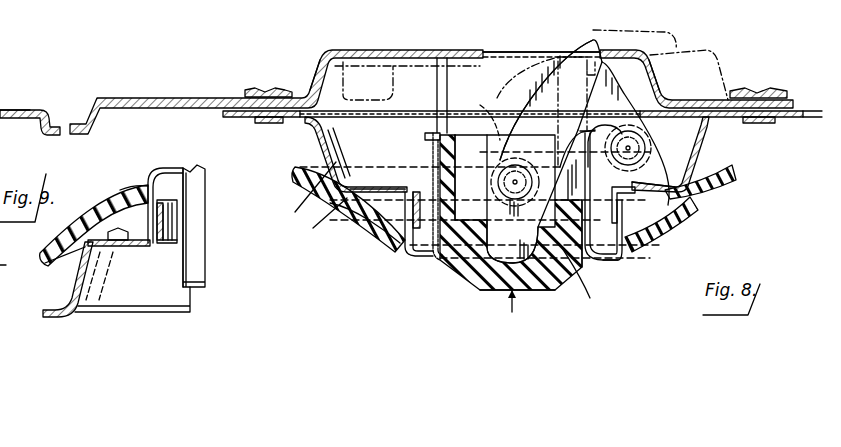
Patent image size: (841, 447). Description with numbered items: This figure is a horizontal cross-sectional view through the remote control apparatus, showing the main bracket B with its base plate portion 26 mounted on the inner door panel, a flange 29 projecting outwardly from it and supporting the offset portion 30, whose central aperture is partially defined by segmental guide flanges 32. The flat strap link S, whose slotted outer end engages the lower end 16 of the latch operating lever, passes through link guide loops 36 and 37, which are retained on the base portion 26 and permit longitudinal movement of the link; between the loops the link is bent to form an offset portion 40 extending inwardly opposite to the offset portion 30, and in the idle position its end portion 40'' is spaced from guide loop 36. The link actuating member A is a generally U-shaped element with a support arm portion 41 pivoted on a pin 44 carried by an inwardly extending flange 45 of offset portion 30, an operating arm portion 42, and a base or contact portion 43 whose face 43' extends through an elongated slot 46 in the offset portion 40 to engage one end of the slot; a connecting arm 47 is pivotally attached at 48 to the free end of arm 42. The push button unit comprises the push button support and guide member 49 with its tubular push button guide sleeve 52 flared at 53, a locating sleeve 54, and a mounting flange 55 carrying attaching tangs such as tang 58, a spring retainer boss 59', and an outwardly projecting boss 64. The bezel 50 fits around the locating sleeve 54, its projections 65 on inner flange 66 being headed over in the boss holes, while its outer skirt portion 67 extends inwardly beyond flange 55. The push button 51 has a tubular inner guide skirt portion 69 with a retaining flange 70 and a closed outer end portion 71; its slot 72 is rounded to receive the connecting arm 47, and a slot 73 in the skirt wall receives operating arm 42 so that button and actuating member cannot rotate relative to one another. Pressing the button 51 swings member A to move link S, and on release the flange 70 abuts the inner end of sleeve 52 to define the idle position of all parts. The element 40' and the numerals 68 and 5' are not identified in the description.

In FIG. 8, the link member S is at (157, 97).
In FIG. 8, the lower end of latch operating lever 16 is at (0, 72).
In FIG. 8, the base plate portion 26 is at (312, 120).
In FIG. 9, the base plate portion 26 is at (47, 314).
In FIG. 8, the flange 29 is at (323, 186).
In FIG. 9, the flange 29 is at (88, 303).
In FIG. 8, the offset portion 30 is at (400, 185).
In FIG. 9, the offset portion 30 is at (143, 247).
In FIG. 8, the guide flanges 32 is at (410, 253).
In FIG. 9, the guide flanges 32 is at (163, 224).
In FIG. 8, the link guide loop 36 is at (256, 87).
In FIG. 8, the link guide loop 37 is at (774, 88).
In FIG. 8, the offset portion of link 40 is at (564, 61).
In FIG. 8, the cover plate slanted portion 40' is at (717, 65).
In FIG. 8, the end portion of offset 40'' is at (301, 71).
In FIG. 8, the arm portion 41 is at (642, 94).
In FIG. 8, the arm portion 42 is at (510, 135).
In FIG. 8, the base portion 43 is at (559, 88).
In FIG. 8, the face 43' is at (570, 88).
In FIG. 8, the pin 44 is at (645, 147).
In FIG. 8, the flange 45 is at (665, 186).
In FIG. 8, the elongated slot 46 is at (497, 52).
In FIG. 8, the connecting arm 47 is at (570, 280).
In FIG. 8, the pivot 48 is at (500, 184).
In FIG. 8, the push button support and guide member 49 is at (418, 270).
In FIG. 9, the push button support and guide member 49 is at (162, 170).
In FIG. 8, the bezel 50 is at (353, 228).
In FIG. 9, the bezel 50 is at (133, 185).
In FIG. 8, the push button 51 is at (465, 287).
In FIG. 9, the push button 51 is at (194, 226).
In FIG. 8, the push button guide sleeve 52 is at (620, 236).
In FIG. 9, the push button guide sleeve 52 is at (180, 240).
In FIG. 8, the flared outer end 53 is at (608, 263).
In FIG. 8, the locating sleeve 54 is at (376, 240).
In FIG. 9, the locating sleeve 54 is at (172, 193).
In FIG. 8, the mounting flange 55 is at (690, 214).
In FIG. 8, the attaching tang 58 is at (693, 157).
In FIG. 8, the boss 59' is at (328, 223).
In FIG. 9, the boss 64 is at (165, 217).
In FIG. 9, the projections 65 is at (118, 242).
In FIG. 9, the inner flange 66 is at (72, 261).
In FIG. 8, the outer skirt portion 67 is at (734, 182).
In FIG. 9, the outer skirt portion 67 is at (52, 245).
In FIG. 8, the rail 68 is at (372, 185).
In FIG. 8, the inner guide skirt portion 69 is at (452, 172).
In FIG. 8, the retaining flange 70 is at (432, 134).
In FIG. 8, the closed outer end portion 71 is at (540, 294).
In FIG. 8, the slot 72 is at (576, 268).
In FIG. 8, the slot 73 is at (556, 162).
In FIG. 8, the link actuating member A is at (534, 76).
In FIG. 8, the main bracket B is at (792, 116).
In FIG. 9, the panel 5' is at (8, 274).